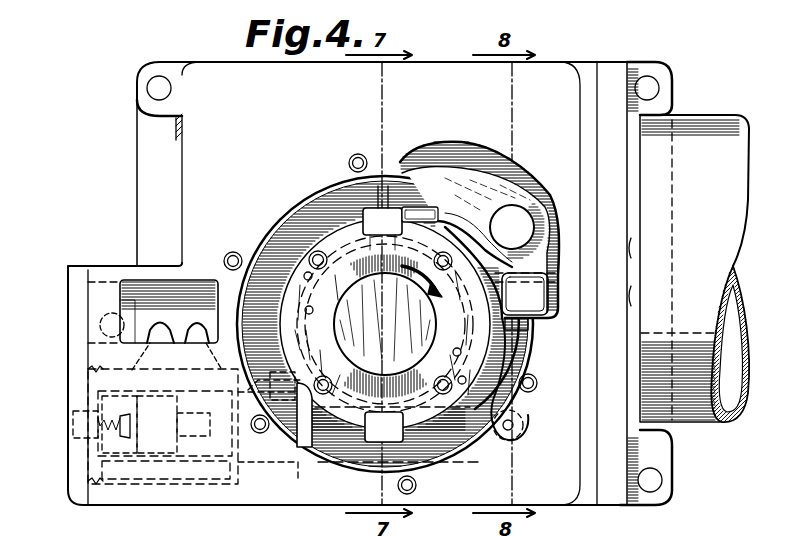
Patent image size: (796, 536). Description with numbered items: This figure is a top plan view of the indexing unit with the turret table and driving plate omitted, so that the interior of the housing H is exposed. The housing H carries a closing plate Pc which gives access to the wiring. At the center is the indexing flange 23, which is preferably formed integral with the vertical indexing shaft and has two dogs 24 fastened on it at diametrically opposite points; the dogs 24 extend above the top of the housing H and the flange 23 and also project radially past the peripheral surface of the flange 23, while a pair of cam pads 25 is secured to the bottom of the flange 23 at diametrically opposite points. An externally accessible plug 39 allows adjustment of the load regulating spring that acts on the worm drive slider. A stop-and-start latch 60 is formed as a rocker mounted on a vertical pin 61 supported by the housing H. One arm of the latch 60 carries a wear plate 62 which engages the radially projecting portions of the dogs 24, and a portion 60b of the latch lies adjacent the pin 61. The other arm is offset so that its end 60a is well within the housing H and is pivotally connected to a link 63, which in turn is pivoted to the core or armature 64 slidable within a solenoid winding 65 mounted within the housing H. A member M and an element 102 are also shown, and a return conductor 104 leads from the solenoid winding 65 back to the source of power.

The housing H is at (200, 141).
The strap bracket M is at (693, 138).
The closing plate Pc is at (70, 337).
The indexing flange 23 is at (345, 262).
The dogs 24 is at (383, 196).
The cam pads 25 is at (284, 250).
The externally accessible plug 39 is at (180, 178).
The stop-and-start latch 60 is at (485, 190).
The end of latch rocker arm 60a is at (530, 417).
The cam lever lug 60b is at (537, 338).
The vertical pin 61 is at (520, 216).
The wear plate 62 is at (424, 212).
The link 63 is at (447, 430).
The core or armature 64 is at (292, 456).
The solenoid winding 65 is at (170, 468).
The finger 102 is at (199, 320).
The return conductor 104 is at (157, 322).